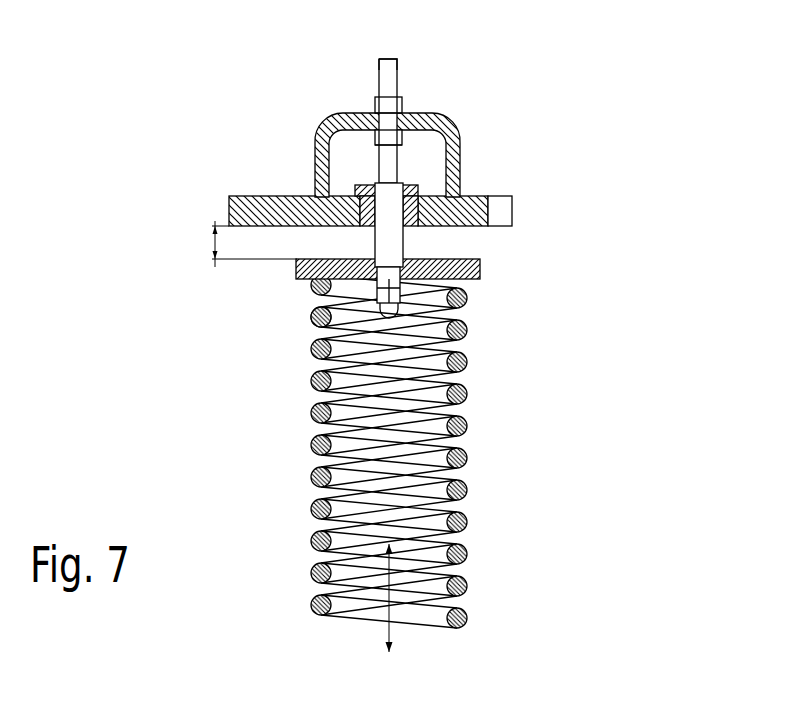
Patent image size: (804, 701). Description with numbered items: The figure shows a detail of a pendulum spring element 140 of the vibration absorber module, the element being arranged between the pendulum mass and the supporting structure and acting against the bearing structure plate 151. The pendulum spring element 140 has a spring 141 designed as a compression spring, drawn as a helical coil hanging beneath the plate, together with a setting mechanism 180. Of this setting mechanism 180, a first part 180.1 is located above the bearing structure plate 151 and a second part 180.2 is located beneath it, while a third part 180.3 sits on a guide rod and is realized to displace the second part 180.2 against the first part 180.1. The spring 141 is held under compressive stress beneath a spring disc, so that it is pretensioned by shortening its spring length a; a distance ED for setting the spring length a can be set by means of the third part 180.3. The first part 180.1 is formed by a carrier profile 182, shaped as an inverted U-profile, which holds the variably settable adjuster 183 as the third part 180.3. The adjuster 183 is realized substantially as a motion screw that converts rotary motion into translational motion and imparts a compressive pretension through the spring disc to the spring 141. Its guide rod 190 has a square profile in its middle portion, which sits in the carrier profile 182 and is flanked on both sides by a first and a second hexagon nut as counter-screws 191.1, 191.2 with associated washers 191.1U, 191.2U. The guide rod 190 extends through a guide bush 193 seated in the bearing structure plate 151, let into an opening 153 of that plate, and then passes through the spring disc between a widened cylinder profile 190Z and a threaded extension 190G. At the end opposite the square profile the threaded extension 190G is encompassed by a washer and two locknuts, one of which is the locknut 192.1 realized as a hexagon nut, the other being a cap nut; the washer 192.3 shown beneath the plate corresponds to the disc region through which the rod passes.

The pendulum spring element 140 is at (698, 67).
The spring 141 is at (490, 459).
The bearing structure plate 151 is at (217, 210).
The opening 153 is at (453, 227).
The setting mechanism 180 is at (426, 167).
The first part 180.1 is at (607, 142).
The second part 180.2 is at (633, 272).
The third part 180.3 is at (350, 75).
The carrier profile 182 is at (468, 125).
The adjuster 183 is at (406, 48).
The guide rod 190 is at (390, 75).
The widened cylinder profile 190Z is at (383, 245).
The threaded extension 190G is at (468, 303).
The first counter-screw 191.1 is at (403, 137).
The second counter-screw 191.2 is at (403, 103).
The washer 191.1U is at (376, 133).
The washer 191.2U is at (375, 110).
The locknut 192.1 is at (310, 325).
The washer 192.3 is at (312, 290).
The guide bush 193 is at (355, 188).
The distance ED is at (215, 243).
The spring length a is at (382, 601).